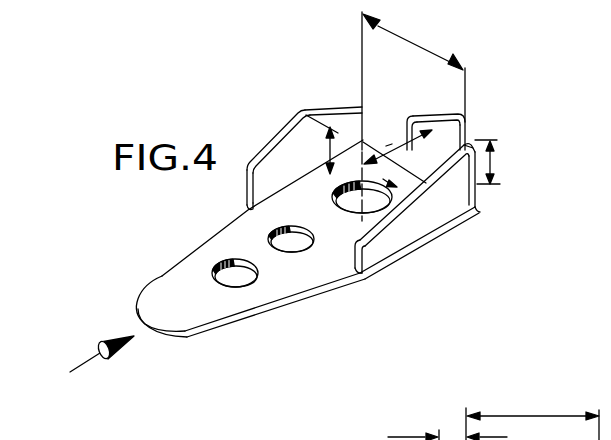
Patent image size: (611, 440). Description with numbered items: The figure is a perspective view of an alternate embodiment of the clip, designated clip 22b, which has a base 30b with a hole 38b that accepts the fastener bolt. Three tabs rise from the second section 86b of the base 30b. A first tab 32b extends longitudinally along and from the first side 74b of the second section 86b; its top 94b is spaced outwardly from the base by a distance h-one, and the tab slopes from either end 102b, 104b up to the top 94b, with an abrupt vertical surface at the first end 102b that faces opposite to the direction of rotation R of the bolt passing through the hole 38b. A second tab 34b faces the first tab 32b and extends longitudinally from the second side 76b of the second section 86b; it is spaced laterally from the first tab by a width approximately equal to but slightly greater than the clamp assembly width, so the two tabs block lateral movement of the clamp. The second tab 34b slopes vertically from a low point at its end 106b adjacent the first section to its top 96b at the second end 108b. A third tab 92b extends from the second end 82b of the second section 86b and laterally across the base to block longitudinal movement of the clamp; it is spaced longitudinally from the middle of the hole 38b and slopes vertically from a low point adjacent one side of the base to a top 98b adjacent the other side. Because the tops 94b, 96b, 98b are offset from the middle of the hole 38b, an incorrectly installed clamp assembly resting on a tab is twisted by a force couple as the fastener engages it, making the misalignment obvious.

The clip 22b is at (136, 285).
The base 30b is at (183, 281).
The first tab 32b is at (268, 173).
The second tab 34b is at (382, 243).
The hole 38b is at (345, 217).
The first side 74b is at (200, 243).
The second side 76b is at (218, 333).
The second end 82b is at (389, 147).
The second section 86b is at (364, 277).
The third tab 92b is at (442, 117).
The top of first tab 94b is at (303, 108).
The top of second tab 96b is at (477, 146).
The top of third tab 98b is at (466, 116).
The first end of first tab 102b is at (243, 195).
The second end of first tab 104b is at (366, 112).
The end of second tab 106b is at (355, 262).
The second end of second tab 108b is at (475, 184).